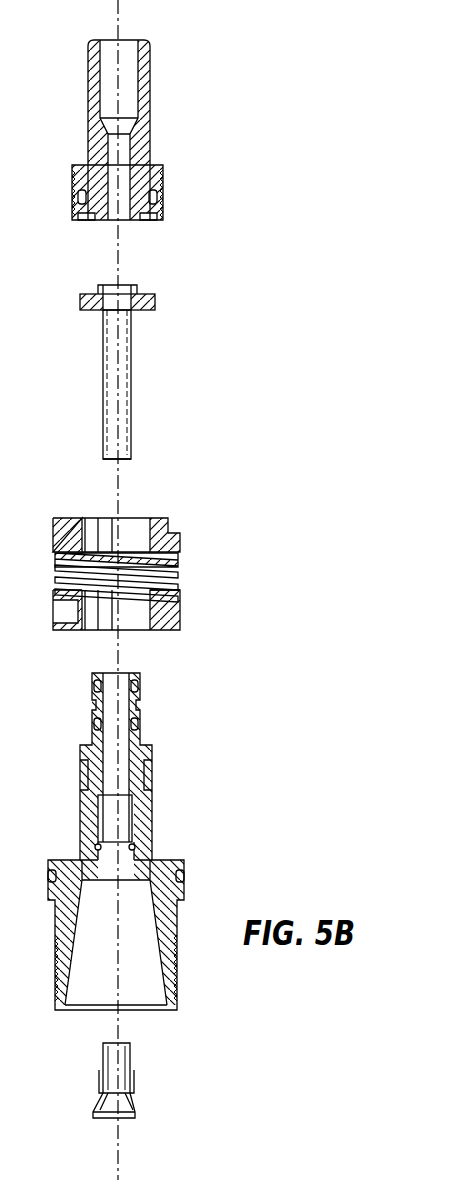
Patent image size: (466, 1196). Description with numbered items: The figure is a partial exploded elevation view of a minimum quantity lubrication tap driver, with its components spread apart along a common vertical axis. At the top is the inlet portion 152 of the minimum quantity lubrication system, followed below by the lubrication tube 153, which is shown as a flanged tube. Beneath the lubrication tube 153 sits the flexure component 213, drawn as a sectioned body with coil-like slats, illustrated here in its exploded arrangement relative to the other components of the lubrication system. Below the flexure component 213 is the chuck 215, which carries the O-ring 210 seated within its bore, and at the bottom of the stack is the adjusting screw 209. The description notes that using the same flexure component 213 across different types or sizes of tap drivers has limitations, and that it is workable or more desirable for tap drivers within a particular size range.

The inlet portion 152 is at (138, 147).
The lubrication tube 153 is at (143, 297).
The flexure component 213 is at (180, 578).
The chuck 215 is at (143, 830).
The O-ring 210 is at (136, 849).
The adjusting screw 209 is at (135, 1110).